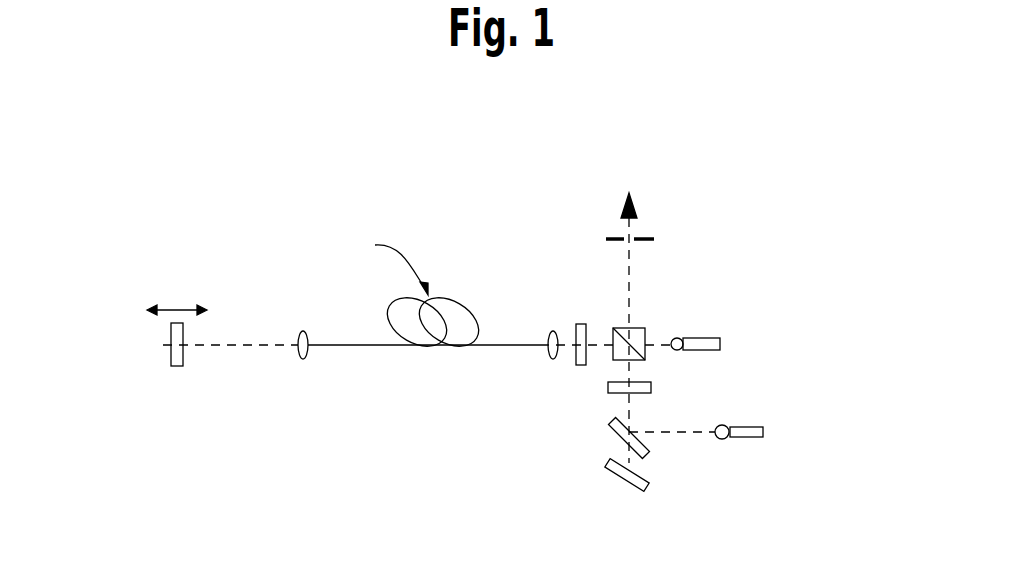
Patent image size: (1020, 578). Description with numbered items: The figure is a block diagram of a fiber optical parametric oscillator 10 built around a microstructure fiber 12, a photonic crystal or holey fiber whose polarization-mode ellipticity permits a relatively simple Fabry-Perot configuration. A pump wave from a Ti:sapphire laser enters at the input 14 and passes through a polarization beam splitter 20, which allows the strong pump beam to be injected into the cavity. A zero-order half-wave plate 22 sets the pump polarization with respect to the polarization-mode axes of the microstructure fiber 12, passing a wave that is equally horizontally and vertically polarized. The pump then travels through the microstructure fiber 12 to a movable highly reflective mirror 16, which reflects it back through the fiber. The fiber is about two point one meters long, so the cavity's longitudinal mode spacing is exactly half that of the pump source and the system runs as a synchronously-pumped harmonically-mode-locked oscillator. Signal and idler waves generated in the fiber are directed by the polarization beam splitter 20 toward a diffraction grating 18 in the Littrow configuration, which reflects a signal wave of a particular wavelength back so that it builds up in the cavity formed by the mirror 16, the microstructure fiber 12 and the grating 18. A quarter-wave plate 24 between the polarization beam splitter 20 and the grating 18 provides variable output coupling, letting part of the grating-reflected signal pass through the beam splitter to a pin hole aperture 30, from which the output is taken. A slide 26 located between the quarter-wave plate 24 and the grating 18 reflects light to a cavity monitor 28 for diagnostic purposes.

The optical parametric oscillator 10 is at (551, 139).
The microstructure fiber 12 is at (492, 345).
The pump wave input 14 is at (720, 344).
The movable highly reflective mirror 16 is at (170, 338).
The diffraction grating 18 is at (647, 487).
The polarization beam splitter 20 is at (654, 318).
The zero-order half-wave plate 22 is at (582, 323).
The quarter-wave plate 24 is at (652, 385).
The slide 26 is at (613, 425).
The cavity monitor 28 is at (763, 432).
The pin hole aperture 30 is at (655, 238).